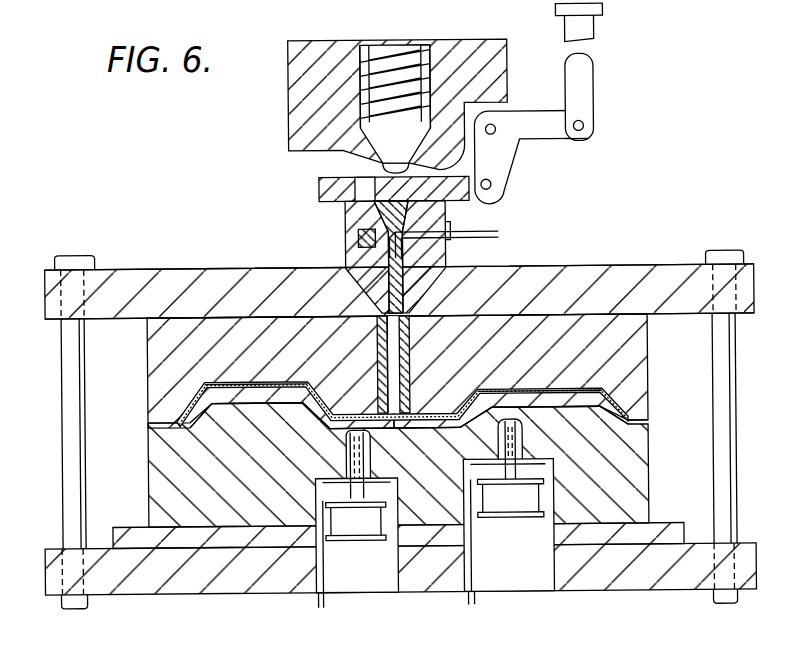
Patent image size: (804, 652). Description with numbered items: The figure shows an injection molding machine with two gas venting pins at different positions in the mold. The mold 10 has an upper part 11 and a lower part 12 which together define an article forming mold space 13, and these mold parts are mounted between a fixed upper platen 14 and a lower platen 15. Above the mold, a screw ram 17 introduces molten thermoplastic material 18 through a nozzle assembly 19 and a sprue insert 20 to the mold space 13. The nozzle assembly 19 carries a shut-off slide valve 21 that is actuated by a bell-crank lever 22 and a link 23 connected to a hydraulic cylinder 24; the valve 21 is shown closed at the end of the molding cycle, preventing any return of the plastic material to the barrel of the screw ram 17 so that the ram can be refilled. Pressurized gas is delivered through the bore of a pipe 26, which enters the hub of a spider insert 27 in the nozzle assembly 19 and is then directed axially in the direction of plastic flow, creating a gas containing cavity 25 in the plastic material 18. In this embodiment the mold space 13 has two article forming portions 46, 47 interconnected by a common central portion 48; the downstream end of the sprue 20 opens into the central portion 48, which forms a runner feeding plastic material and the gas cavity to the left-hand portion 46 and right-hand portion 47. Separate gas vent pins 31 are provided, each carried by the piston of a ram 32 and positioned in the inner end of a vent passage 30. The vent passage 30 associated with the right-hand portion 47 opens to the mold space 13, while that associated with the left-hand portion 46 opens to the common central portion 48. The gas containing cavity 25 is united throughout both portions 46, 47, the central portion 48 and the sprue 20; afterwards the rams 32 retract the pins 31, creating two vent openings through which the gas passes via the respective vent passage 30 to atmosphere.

The mold 10 is at (130, 363).
The upper mold part 11 is at (155, 368).
The lower mold part 12 is at (156, 504).
The article forming mold space 13 is at (600, 409).
The fixed upper platen 14 is at (133, 283).
The lower platen 15 is at (226, 587).
The screw ram 17 is at (301, 108).
The molten thermoplastic material 18 is at (347, 262).
The nozzle assembly 19 is at (347, 212).
The sprue insert 20 is at (458, 300).
The shut-off slide valve 21 is at (330, 186).
The bell-crank lever 22 is at (533, 112).
The link 23 is at (587, 87).
The hydraulic cylinder 24 is at (598, 12).
The gas containing cavity 25 is at (203, 401).
The pipe 26 is at (500, 233).
The spider insert 27 is at (445, 229).
The vent passage 30 is at (350, 457).
The pin 31 is at (347, 445).
The ram 32 is at (358, 527).
The left-hand article forming portion 46 is at (237, 382).
The right-hand article forming portion 47 is at (592, 392).
The common central portion 48 is at (424, 432).